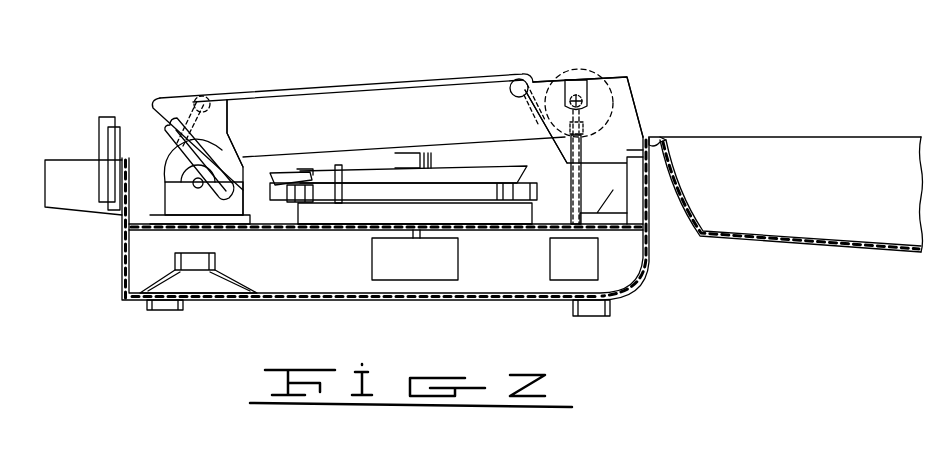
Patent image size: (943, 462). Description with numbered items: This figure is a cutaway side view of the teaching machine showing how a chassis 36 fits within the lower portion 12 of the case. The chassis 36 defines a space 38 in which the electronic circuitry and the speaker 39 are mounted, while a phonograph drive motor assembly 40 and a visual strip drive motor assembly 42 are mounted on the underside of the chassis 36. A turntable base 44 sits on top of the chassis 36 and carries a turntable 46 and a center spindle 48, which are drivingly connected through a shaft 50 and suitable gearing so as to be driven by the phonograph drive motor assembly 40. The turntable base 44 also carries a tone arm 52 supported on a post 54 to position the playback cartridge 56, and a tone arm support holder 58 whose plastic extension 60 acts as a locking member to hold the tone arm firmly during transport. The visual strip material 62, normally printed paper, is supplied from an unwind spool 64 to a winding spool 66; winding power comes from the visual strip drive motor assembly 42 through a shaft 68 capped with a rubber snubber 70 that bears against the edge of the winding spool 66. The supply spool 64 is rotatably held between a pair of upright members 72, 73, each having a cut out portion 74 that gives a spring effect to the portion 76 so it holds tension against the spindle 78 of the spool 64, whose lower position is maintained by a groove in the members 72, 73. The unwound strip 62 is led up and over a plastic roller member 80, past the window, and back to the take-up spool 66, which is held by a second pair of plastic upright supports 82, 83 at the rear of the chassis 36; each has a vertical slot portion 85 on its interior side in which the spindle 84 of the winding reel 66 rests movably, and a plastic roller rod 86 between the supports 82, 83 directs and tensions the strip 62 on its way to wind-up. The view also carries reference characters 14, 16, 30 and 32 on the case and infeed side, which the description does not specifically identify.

The lower portion of the case 12 is at (497, 300).
The tank 14 is at (768, 148).
The flange 16 is at (660, 142).
The conveyor 30 is at (70, 162).
The guide plate 32 is at (112, 214).
The chassis 36 is at (272, 231).
The space 38 is at (285, 277).
The speaker 39 is at (212, 300).
The phonograph drive motor assembly 40 is at (375, 266).
The visual strip drive motor assembly 42 is at (557, 271).
The turntable base 44 is at (357, 215).
The turntable 46 is at (300, 201).
The center spindle 48 is at (408, 155).
The shaft 50 is at (416, 240).
The tone arm 52 is at (497, 173).
The post 54 is at (505, 201).
The playback cartridge 56 is at (283, 176).
The tone arm support holder 58 is at (342, 204).
The plastic extension 60 is at (340, 165).
The visual strip material 62 is at (295, 96).
The unwind reel or spool 64 is at (166, 174).
The winding spool 66 is at (580, 70).
The shaft 68 is at (572, 206).
The rubber snubber 70 is at (588, 132).
The upright support member 72 is at (165, 98).
The upright support member 73 is at (165, 98).
The cut out portion 74 is at (204, 158).
The spring portion 76 is at (194, 152).
The spindle 78 is at (198, 189).
The plastic roller member 80 is at (208, 96).
The plastic upright support 82 is at (630, 96).
The plastic upright support 83 is at (630, 96).
The spindle of the winding reel 84 is at (543, 118).
The vertical slot portion 85 is at (582, 88).
The plastic roller rod 86 is at (512, 92).